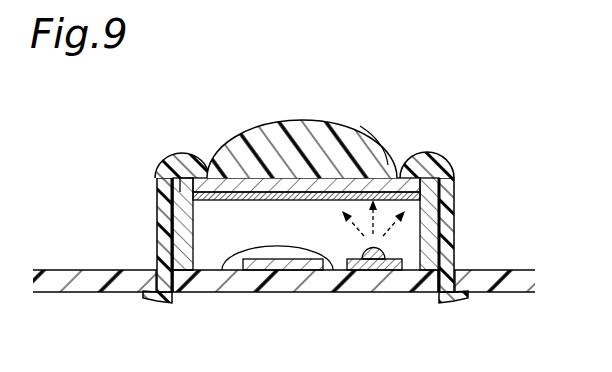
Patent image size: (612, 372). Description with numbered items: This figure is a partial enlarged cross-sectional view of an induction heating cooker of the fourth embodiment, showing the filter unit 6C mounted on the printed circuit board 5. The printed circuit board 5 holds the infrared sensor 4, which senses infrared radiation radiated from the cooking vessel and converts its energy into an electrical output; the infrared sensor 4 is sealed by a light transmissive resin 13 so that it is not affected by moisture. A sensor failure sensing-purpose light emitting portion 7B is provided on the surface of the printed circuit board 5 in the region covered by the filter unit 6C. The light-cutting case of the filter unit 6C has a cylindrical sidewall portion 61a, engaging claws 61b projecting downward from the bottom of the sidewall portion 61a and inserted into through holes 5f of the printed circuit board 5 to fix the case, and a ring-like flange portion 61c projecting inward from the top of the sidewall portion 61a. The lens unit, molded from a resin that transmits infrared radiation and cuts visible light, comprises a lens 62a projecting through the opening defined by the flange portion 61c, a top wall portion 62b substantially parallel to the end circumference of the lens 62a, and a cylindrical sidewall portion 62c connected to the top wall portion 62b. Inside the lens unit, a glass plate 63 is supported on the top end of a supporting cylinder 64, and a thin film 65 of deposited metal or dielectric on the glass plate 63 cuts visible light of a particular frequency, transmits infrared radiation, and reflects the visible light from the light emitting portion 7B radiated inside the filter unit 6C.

The filter unit 6C is at (311, 191).
The lens 62a is at (233, 100).
The flange portion 61c is at (177, 155).
The top wall portion 62b is at (449, 165).
The sidewall portion 62c is at (438, 200).
The glass plate 63 is at (181, 181).
The thin film 65 is at (185, 213).
The sidewall portion 61a is at (165, 248).
The engaging claws 61b is at (157, 302).
The through holes 5f is at (182, 297).
The supporting cylinder 64 is at (176, 292).
The infrared sensor 4 is at (290, 275).
The light transmissive resin 13 is at (260, 255).
The sensor failure sensing-purpose light emitting portion 7B is at (362, 271).
The printed circuit board 5 is at (500, 273).